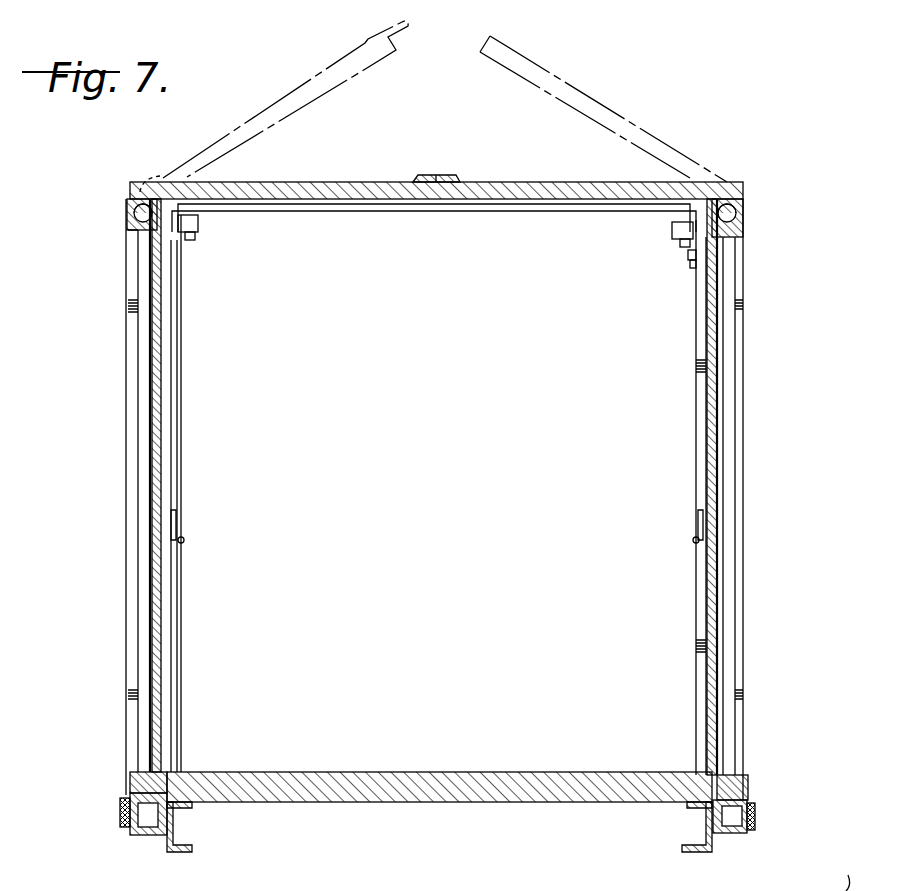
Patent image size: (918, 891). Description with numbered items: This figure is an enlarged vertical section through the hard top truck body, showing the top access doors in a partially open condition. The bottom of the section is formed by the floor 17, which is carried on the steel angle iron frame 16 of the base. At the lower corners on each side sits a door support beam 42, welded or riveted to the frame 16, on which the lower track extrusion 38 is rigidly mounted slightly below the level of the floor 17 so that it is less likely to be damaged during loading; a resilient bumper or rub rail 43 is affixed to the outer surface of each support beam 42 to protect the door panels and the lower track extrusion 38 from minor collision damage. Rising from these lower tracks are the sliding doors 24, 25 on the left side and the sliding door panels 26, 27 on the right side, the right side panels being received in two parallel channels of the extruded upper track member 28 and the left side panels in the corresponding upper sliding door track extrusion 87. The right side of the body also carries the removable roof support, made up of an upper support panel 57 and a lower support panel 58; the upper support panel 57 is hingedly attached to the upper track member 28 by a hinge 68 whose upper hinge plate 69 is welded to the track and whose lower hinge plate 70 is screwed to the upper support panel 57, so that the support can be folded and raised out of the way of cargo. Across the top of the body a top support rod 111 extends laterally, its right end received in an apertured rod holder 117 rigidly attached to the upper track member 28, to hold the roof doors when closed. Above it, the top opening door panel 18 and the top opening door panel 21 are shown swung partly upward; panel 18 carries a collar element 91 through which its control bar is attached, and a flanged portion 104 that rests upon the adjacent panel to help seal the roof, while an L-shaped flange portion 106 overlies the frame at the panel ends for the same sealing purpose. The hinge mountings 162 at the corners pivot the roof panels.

The steel angle iron frame 16 is at (182, 852).
The floor 17 is at (372, 772).
The top opening door panel 18 is at (322, 182).
The top opening door panel 21 is at (538, 182).
The sliding door 24 is at (172, 382).
The sliding door 25 is at (138, 435).
The sliding door panel 26 is at (706, 470).
The sliding door panel 27 is at (745, 525).
The upper track member 28 is at (744, 225).
The lower track extrusion 38 is at (130, 782).
The door support beam 42 is at (140, 836).
The resilient bumper or rub rail 43 is at (120, 810).
The upper support panel 57 is at (696, 415).
The lower support panel 58 is at (696, 658).
The hinge 68 is at (688, 258).
The upper hinge plate 69 is at (681, 246).
The lower hinge plate 70 is at (692, 268).
The upper sliding door track extrusion 87 is at (127, 262).
The collar element 91 is at (128, 200).
The flanged portion 104 is at (446, 176).
The L-shaped flange portion 106 is at (846, 870).
The top support rod 111 is at (330, 211).
The apertured rod holder 117 is at (672, 231).
The hinge 162 is at (163, 178).